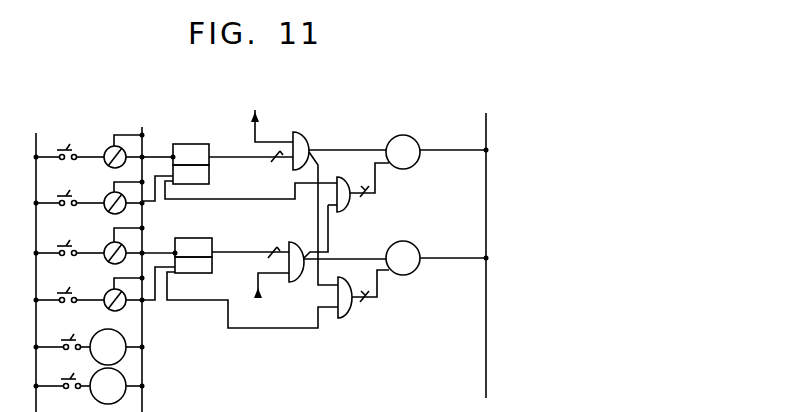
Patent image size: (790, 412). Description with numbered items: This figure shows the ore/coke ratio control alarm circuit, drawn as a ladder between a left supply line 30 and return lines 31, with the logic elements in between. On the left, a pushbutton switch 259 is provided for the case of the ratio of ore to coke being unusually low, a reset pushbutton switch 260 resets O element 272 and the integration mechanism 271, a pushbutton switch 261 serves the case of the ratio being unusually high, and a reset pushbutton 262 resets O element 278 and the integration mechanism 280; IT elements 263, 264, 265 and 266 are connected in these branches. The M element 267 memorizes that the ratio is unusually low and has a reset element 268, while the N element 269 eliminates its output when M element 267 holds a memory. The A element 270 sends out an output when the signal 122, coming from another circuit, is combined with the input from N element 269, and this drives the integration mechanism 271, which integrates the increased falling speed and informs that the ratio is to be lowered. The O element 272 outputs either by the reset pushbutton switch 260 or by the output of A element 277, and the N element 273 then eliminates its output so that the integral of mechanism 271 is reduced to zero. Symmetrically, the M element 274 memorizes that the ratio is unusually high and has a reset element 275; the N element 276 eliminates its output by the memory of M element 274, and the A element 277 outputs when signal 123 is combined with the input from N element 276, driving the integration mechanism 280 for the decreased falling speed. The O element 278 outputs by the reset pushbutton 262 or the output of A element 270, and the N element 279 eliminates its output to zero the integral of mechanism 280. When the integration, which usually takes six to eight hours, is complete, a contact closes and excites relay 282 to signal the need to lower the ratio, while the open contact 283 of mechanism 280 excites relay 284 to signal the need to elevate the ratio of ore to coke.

The supply line 30 is at (36, 133).
The return line 31 is at (142, 128).
The output signal 122 is at (257, 108).
The output signal 123 is at (259, 298).
The pushbutton switch 259 is at (70, 144).
The reset pushbutton switch 260 is at (70, 190).
The pushbutton switch 261 is at (70, 240).
The reset pushbutton 262 is at (70, 287).
The IT element 263 is at (74, 334).
The IT element 264 is at (113, 213).
The IT element 265 is at (113, 263).
The IT element 266 is at (115, 310).
The M element 267 is at (179, 148).
The reset element 268 is at (201, 177).
The N element 269 is at (274, 163).
The A element 270 is at (300, 137).
The integration mechanism 271 is at (394, 162).
The O element 272 is at (340, 180).
The N element 273 is at (364, 197).
The M element 274 is at (180, 240).
The reset element 275 is at (196, 274).
The N element 276 is at (287, 245).
The A element 277 is at (296, 280).
The O element 278 is at (344, 316).
The N element 279 is at (364, 301).
The integration mechanism 280 is at (394, 268).
The relay 282 is at (98, 357).
The open contact 283 is at (74, 373).
The relay 284 is at (98, 396).